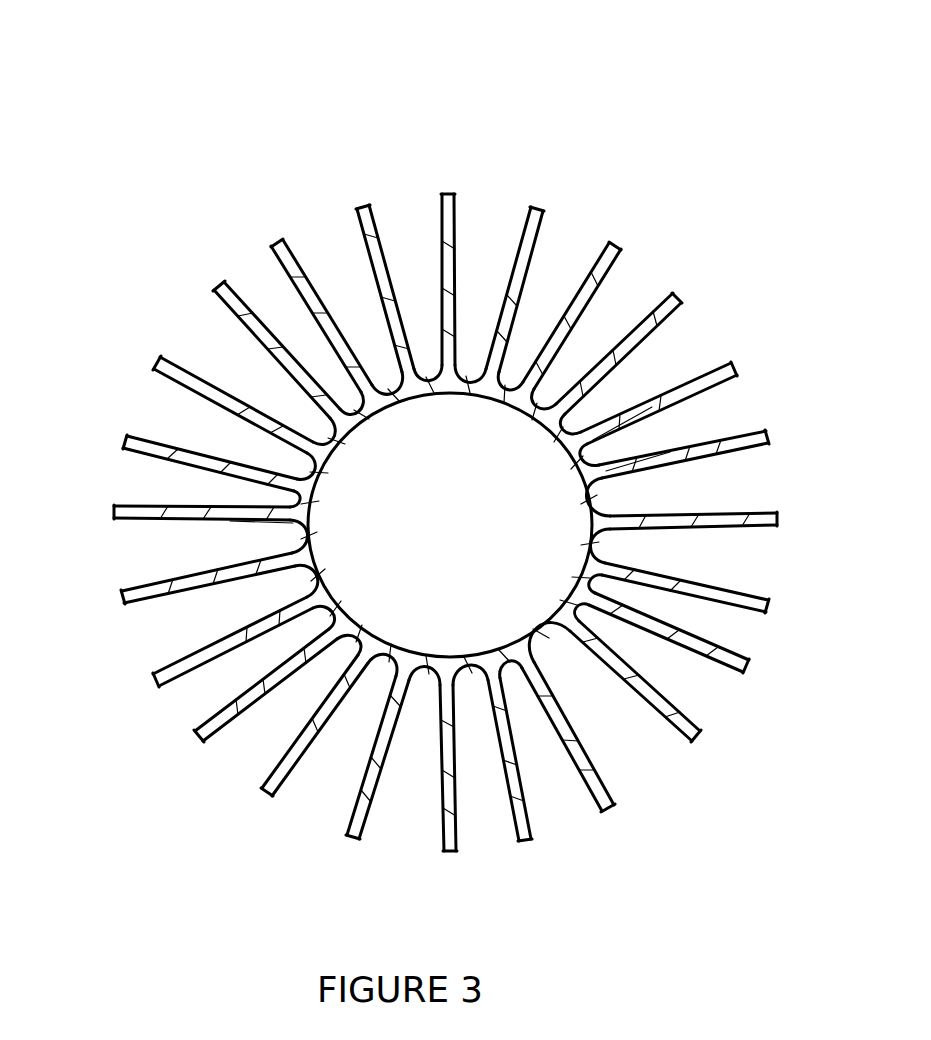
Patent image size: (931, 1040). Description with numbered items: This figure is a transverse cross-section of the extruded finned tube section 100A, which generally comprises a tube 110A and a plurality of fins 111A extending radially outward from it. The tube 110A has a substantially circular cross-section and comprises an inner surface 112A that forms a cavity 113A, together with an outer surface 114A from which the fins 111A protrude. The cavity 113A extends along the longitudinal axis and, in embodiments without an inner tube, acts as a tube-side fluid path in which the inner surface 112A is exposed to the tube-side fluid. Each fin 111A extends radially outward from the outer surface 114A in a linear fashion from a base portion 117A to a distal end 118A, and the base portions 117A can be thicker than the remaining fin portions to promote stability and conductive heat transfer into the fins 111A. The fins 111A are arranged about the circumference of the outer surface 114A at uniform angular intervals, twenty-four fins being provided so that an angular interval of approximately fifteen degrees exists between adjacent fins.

The finned tube section 100A is at (707, 143).
The tube 110A is at (567, 418).
The fins 111A is at (458, 215).
The inner surface 112A is at (531, 417).
The cavity 113A is at (486, 534).
The outer surface 114A is at (593, 458).
The base portion 117A is at (438, 372).
The distal end 118A is at (455, 200).